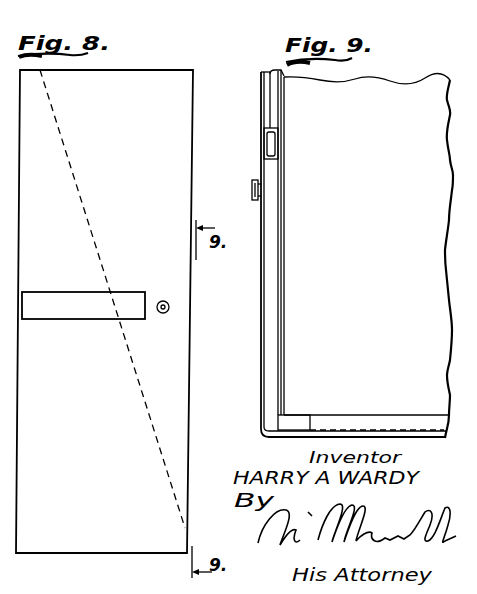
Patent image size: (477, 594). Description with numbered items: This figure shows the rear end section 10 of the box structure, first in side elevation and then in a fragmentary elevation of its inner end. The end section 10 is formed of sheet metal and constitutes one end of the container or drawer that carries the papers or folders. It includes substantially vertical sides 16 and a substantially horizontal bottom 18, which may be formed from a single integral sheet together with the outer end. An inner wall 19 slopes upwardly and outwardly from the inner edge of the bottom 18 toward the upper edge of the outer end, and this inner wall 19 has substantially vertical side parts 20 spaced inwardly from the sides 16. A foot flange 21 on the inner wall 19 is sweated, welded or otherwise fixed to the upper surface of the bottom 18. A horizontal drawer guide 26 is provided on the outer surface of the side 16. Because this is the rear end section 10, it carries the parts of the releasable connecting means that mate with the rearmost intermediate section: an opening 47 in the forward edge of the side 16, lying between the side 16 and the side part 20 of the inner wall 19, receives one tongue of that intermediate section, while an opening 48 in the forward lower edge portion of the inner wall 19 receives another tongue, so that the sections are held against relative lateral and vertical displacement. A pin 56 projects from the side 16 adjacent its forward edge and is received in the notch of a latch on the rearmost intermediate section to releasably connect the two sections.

In FIG. 8, the end section 10 is at (157, 71).
In FIG. 9, the end section 10 is at (337, 240).
In FIG. 8, the side 16 is at (89, 369).
In FIG. 9, the side 16 is at (260, 315).
In FIG. 9, the bottom 18 is at (406, 442).
In FIG. 8, the inner wall 19 is at (93, 248).
In FIG. 9, the inner wall 19 is at (368, 255).
In FIG. 9, the side part 20 is at (283, 238).
In FIG. 9, the foot flange 21 is at (370, 431).
In FIG. 8, the drawer guide 26 is at (83, 305).
In FIG. 9, the opening 47 is at (281, 92).
In FIG. 9, the opening 48 is at (301, 416).
In FIG. 8, the pin 56 is at (164, 301).
In FIG. 9, the pin 56 is at (251, 190).